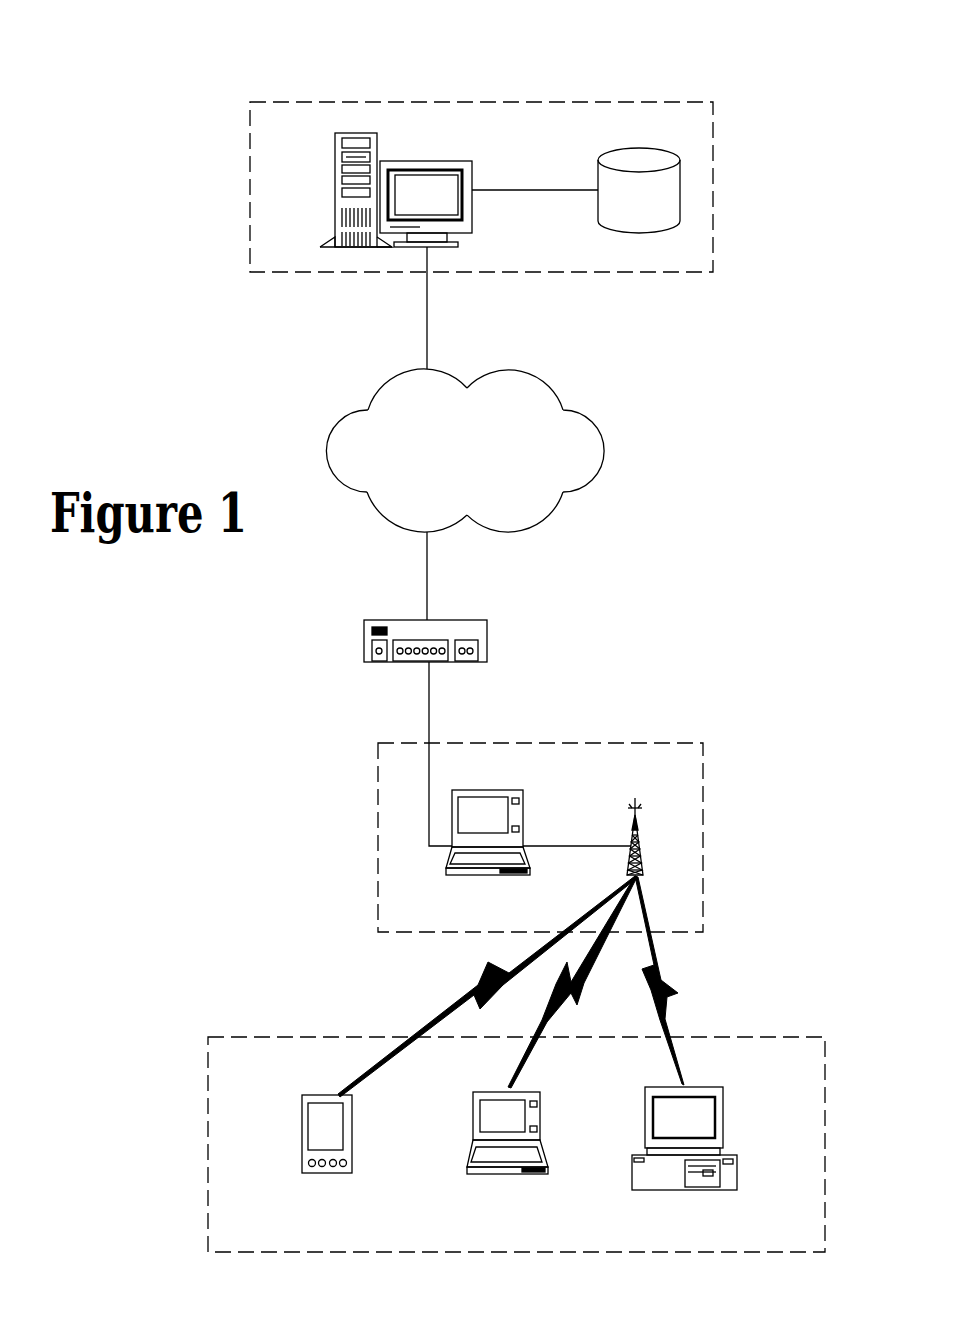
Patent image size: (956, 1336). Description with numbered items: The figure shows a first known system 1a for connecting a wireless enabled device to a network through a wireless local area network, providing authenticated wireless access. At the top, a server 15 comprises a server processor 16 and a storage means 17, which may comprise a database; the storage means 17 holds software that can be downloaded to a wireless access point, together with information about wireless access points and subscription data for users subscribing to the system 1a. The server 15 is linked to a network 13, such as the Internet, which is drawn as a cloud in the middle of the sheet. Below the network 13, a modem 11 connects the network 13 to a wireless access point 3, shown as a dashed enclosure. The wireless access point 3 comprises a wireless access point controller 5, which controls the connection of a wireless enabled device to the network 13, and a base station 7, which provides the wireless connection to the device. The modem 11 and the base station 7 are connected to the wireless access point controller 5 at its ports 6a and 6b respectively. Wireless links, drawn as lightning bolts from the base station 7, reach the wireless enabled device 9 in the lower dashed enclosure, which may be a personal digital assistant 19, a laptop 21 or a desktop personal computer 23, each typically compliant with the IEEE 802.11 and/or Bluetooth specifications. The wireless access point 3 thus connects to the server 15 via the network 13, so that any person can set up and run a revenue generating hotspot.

The system 1a is at (124, 46).
The server 15 is at (248, 154).
The server processor 16 is at (337, 188).
The storage means 17 is at (597, 165).
The network 13 is at (378, 393).
The modem 11 is at (364, 640).
The wireless access point 3 is at (390, 740).
The wireless access point controller 5 is at (485, 875).
The port 6a is at (452, 847).
The port 6b is at (523, 847).
The base station 7 is at (637, 825).
The wireless enabled device 9 is at (206, 1049).
The personal digital assistant 19 is at (326, 1173).
The laptop 21 is at (502, 1174).
The desktop personal computer 23 is at (685, 1190).